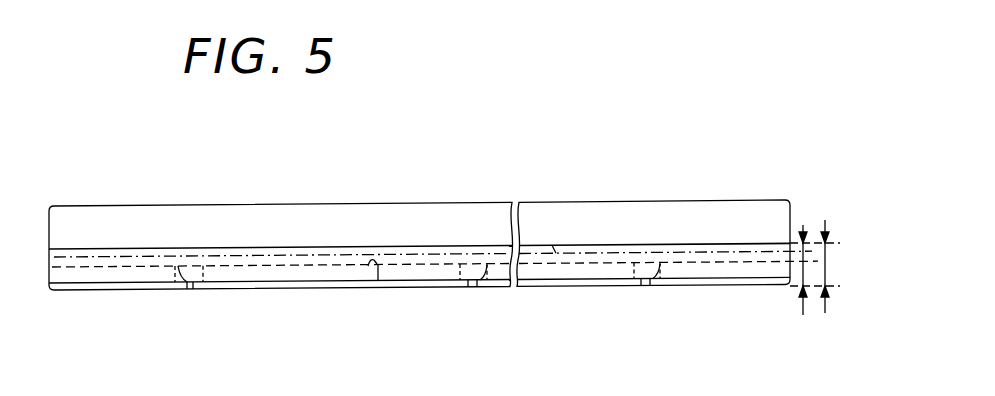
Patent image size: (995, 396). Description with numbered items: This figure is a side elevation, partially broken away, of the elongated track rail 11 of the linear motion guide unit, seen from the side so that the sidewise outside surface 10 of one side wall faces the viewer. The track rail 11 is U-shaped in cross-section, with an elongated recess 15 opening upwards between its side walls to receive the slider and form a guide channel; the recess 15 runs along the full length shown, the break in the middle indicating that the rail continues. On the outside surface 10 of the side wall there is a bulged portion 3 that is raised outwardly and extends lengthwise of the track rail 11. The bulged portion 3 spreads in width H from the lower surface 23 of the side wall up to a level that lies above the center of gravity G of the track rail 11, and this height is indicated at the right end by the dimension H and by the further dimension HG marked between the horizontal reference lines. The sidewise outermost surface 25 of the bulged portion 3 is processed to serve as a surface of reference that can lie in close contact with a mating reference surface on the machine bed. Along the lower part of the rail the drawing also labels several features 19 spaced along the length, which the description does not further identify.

The sidewise outside surface 10 is at (365, 217).
The track rail 11 is at (640, 190).
The center of gravity G is at (552, 255).
The bulged portion 3 is at (320, 275).
The elongated recess 15 is at (378, 290).
The notch 19 is at (190, 291).
The lower surface 23 is at (258, 290).
The sidewise outermost surface 25 is at (575, 270).
The width H is at (826, 228).
The gap height HG is at (804, 272).